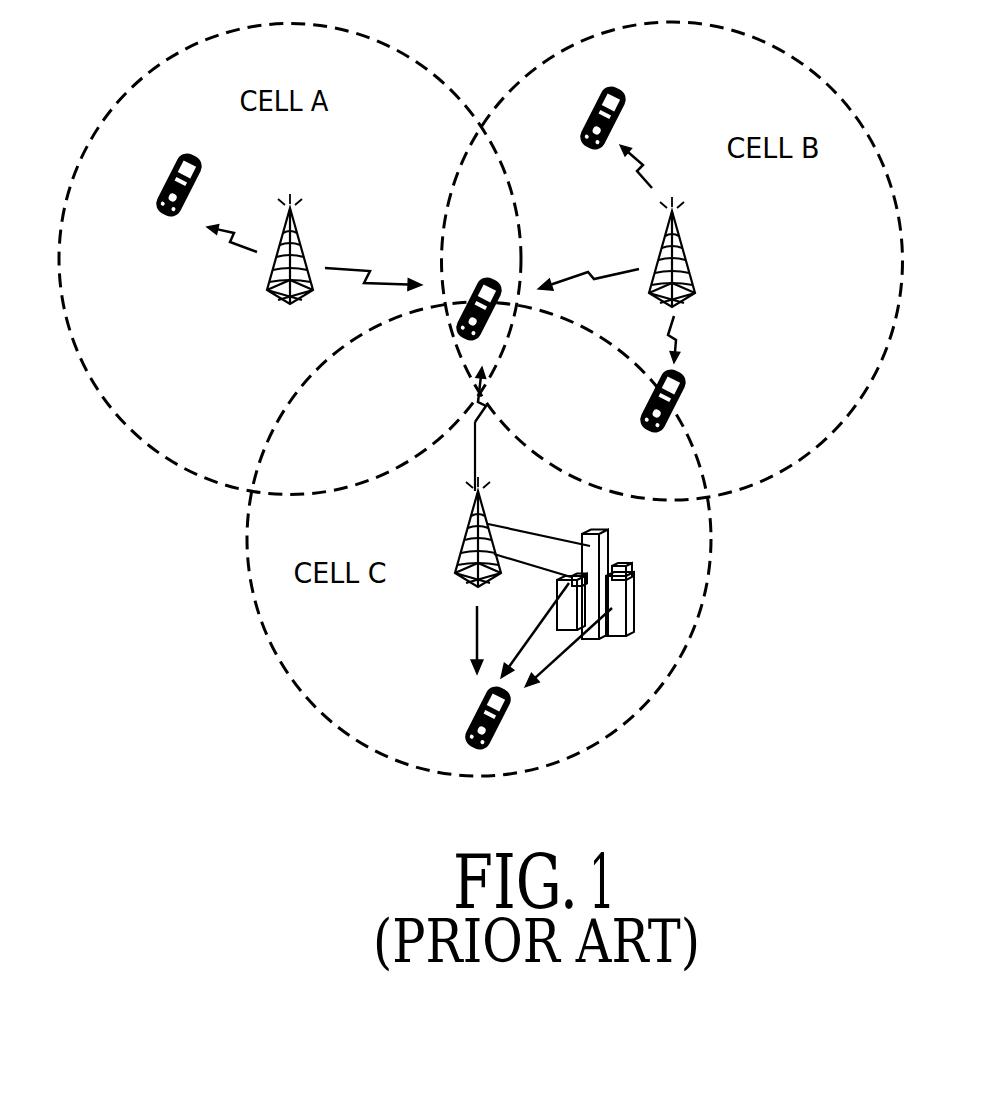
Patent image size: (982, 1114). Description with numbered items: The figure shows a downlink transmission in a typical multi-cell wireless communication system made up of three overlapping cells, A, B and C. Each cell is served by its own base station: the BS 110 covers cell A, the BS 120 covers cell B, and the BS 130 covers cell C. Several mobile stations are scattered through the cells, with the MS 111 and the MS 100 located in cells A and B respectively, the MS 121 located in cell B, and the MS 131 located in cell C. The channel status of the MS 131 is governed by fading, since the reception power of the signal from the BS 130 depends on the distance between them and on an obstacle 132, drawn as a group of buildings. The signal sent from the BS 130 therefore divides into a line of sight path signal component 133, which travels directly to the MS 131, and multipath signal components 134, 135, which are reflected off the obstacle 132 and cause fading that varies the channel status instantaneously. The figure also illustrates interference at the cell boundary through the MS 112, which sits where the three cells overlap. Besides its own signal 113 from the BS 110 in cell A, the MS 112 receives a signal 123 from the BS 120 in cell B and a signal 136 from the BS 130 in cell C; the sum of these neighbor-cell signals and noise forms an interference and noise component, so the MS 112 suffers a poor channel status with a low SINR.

The mobile station 100 is at (687, 382).
The base station 110 is at (304, 250).
The mobile station 111 is at (160, 194).
The mobile station 112 is at (493, 277).
The signal 113 is at (346, 281).
The base station 120 is at (686, 250).
The mobile station 121 is at (620, 91).
The signal 123 is at (612, 273).
The base station 130 is at (470, 530).
The mobile station 131 is at (473, 716).
The obstacle 132 is at (620, 572).
The line of sight path signal component 133 is at (470, 631).
The multipath signal component 134 is at (525, 641).
The multipath signal component 135 is at (559, 658).
The signal 136 is at (475, 445).